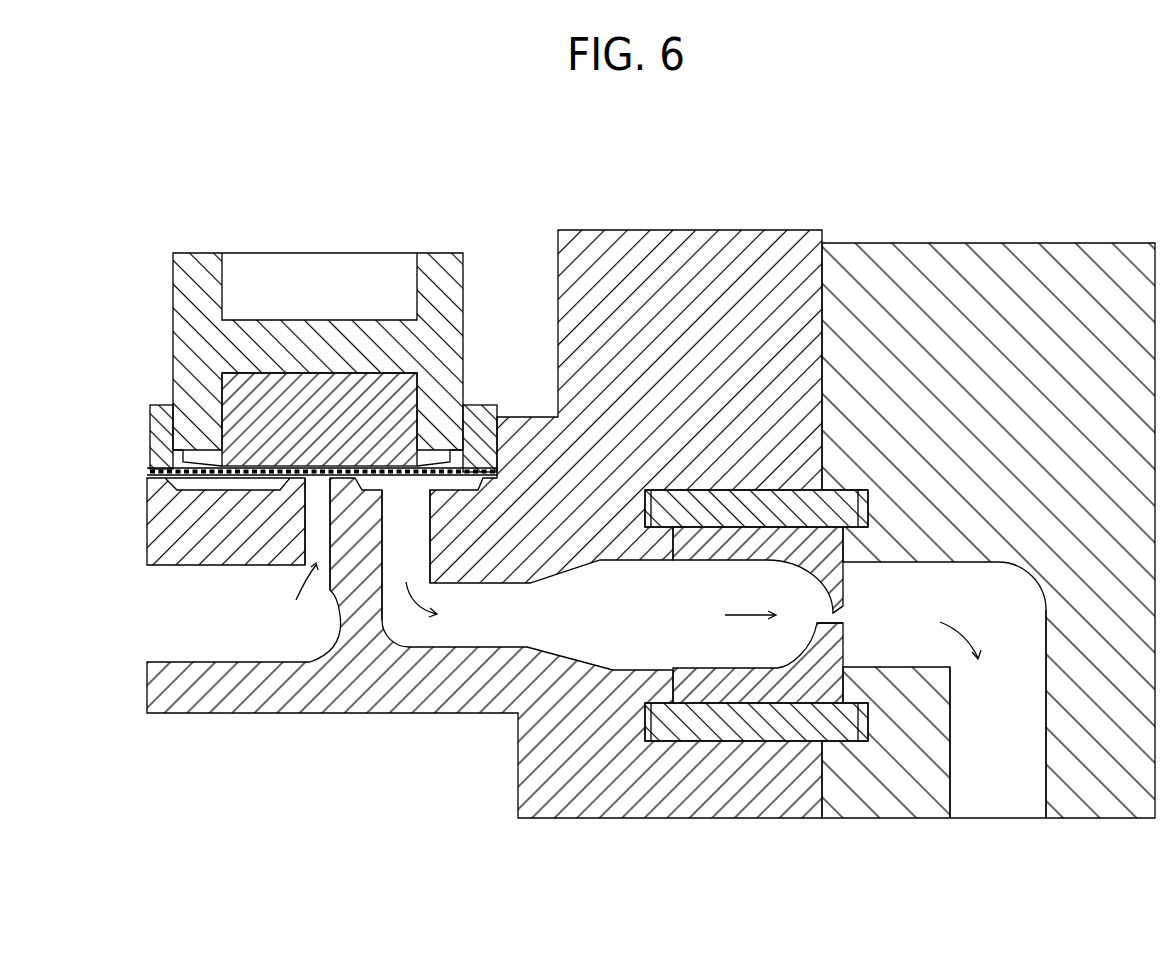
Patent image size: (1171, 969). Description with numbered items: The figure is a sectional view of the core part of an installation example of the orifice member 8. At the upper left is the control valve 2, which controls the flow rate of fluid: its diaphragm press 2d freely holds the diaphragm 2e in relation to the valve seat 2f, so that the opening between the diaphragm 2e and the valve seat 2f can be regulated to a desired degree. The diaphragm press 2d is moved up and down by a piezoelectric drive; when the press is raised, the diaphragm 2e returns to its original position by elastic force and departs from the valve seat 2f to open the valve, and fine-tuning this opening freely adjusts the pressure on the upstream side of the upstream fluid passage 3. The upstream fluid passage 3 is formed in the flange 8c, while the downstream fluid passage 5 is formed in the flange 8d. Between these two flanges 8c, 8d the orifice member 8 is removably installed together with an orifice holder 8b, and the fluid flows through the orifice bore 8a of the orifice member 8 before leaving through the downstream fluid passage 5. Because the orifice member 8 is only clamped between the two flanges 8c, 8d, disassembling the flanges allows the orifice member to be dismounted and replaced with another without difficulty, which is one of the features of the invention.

The control valve 2 is at (386, 216).
The diaphragm press 2d is at (313, 420).
The diaphragm 2e is at (208, 482).
The valve seat 2f is at (288, 482).
The upstream fluid passage 3 is at (492, 623).
The downstream fluid passage 5 is at (993, 743).
The orifice member 8 is at (727, 683).
The orifice bore 8a is at (845, 615).
The orifice holder 8b is at (777, 727).
The flange 8c is at (580, 763).
The flange 8d is at (882, 790).